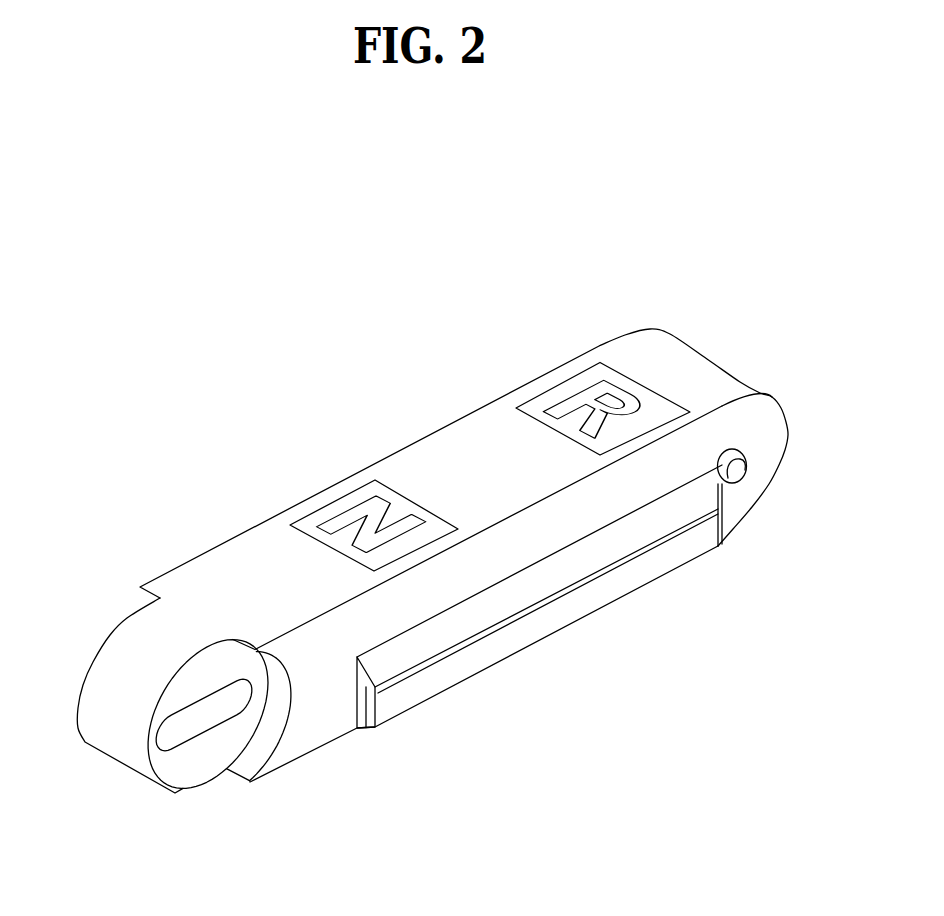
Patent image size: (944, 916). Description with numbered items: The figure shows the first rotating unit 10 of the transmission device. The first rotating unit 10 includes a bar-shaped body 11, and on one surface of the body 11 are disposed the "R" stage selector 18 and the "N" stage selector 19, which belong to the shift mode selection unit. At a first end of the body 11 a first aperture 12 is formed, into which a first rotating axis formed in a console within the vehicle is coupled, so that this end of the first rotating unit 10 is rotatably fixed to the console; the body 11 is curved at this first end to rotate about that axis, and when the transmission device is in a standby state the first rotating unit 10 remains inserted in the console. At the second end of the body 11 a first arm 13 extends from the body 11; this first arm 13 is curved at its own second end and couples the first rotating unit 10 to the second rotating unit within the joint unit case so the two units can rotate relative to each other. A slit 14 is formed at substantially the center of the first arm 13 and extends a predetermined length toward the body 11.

The first rotating unit 10 is at (574, 250).
The body 11 is at (432, 452).
The first aperture 12 is at (737, 483).
The first arm 13 is at (133, 645).
The slit 14 is at (162, 751).
The "R" stage selector 18 is at (568, 390).
The "N" stage selector 19 is at (347, 503).